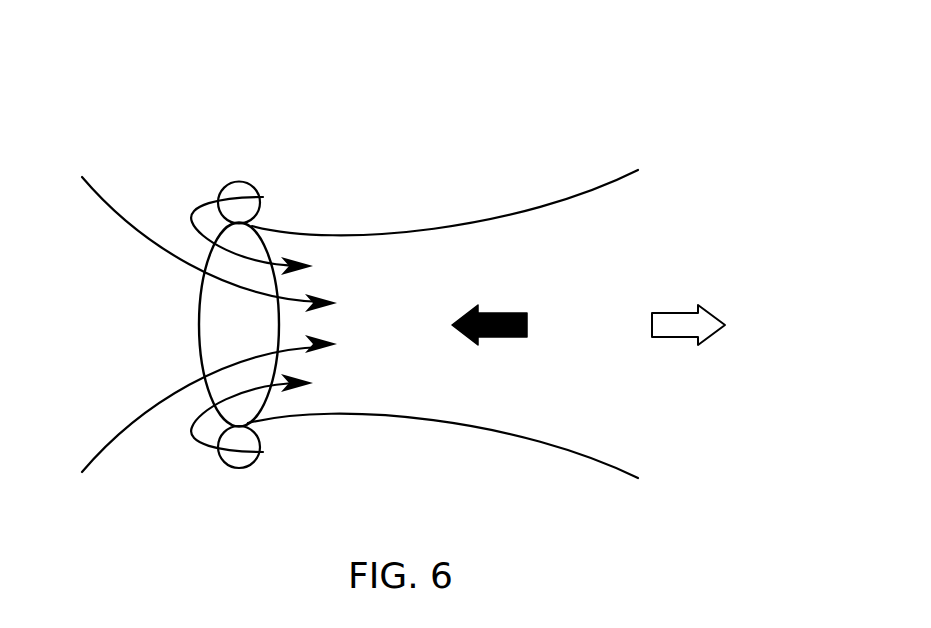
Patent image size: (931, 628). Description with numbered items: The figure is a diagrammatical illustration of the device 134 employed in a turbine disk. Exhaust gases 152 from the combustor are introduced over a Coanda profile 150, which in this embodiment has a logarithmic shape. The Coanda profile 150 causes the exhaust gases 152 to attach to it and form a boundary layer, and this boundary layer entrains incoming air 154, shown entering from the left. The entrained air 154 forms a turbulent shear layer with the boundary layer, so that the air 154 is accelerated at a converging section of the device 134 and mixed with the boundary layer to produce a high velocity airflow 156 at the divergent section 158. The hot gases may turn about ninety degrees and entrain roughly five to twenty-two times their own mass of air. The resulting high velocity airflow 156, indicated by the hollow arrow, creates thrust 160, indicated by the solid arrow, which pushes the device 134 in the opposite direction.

The device 134 is at (568, 73).
The Coanda profile 150 is at (252, 223).
The exhaust gases 152 is at (270, 388).
The incoming air 154 is at (108, 212).
The high velocity airflow 156 is at (677, 313).
The divergent section 158 is at (582, 195).
The thrust 160 is at (500, 313).